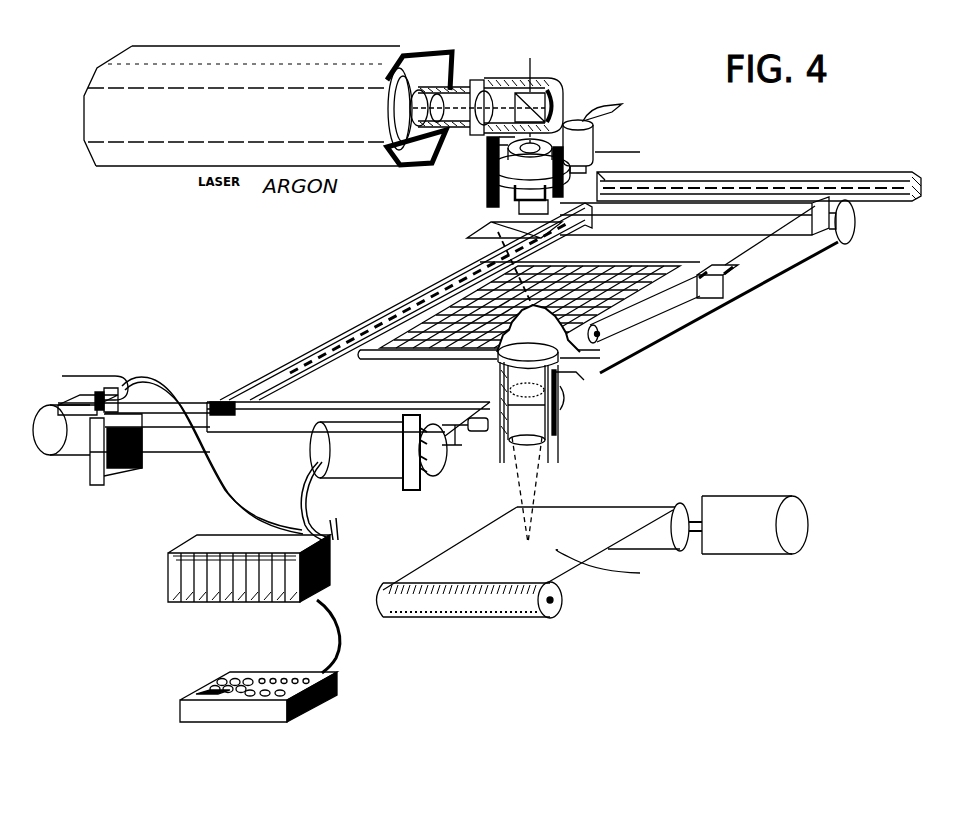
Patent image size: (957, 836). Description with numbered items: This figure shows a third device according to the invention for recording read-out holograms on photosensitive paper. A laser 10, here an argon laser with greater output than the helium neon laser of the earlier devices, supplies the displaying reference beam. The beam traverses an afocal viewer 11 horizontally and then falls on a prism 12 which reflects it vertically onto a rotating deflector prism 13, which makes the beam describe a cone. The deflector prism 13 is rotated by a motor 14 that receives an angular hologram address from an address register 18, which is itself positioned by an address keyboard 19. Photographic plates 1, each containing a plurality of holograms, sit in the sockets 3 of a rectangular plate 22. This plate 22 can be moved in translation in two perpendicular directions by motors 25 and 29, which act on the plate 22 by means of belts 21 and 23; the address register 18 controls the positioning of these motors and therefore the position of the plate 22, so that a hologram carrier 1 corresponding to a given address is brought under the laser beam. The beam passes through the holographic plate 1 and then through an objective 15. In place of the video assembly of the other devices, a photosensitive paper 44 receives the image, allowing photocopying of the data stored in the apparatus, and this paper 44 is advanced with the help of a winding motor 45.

The photographic plate 1 is at (422, 348).
The socket 3 is at (383, 358).
The laser transmitter 10 is at (250, 52).
The afocal viewer 11 is at (460, 90).
The prism 12 is at (560, 92).
The rotating deflector prism 13 is at (482, 229).
The motor 14 is at (593, 128).
The objective 15 is at (558, 373).
The address register 18 is at (167, 578).
The address keyboard 19 is at (180, 714).
The belt 21 is at (179, 453).
The plate 22 is at (381, 317).
The belt 23 is at (711, 316).
The motor 25 is at (321, 457).
The motor 29 is at (90, 392).
The photosensitive paper 44 is at (600, 512).
The winding motor 45 is at (737, 507).